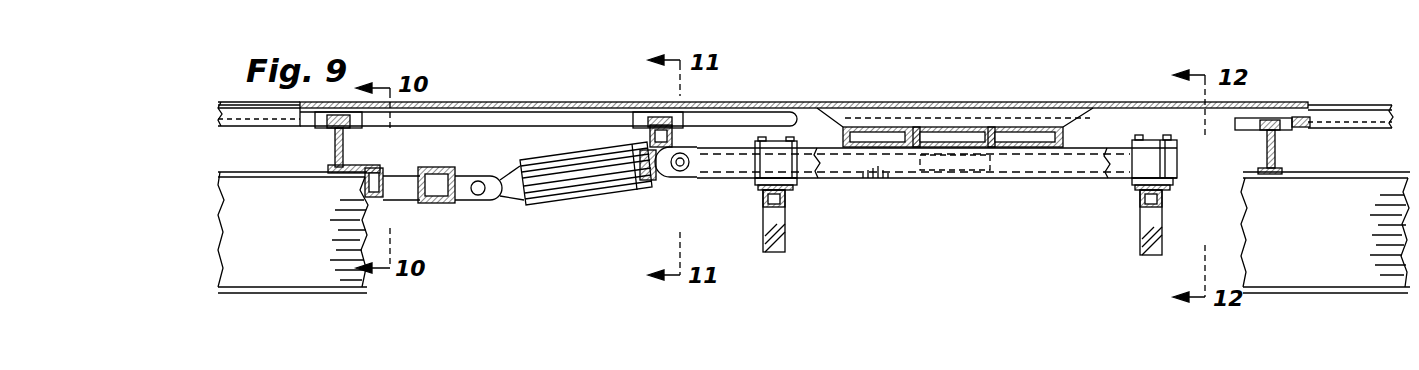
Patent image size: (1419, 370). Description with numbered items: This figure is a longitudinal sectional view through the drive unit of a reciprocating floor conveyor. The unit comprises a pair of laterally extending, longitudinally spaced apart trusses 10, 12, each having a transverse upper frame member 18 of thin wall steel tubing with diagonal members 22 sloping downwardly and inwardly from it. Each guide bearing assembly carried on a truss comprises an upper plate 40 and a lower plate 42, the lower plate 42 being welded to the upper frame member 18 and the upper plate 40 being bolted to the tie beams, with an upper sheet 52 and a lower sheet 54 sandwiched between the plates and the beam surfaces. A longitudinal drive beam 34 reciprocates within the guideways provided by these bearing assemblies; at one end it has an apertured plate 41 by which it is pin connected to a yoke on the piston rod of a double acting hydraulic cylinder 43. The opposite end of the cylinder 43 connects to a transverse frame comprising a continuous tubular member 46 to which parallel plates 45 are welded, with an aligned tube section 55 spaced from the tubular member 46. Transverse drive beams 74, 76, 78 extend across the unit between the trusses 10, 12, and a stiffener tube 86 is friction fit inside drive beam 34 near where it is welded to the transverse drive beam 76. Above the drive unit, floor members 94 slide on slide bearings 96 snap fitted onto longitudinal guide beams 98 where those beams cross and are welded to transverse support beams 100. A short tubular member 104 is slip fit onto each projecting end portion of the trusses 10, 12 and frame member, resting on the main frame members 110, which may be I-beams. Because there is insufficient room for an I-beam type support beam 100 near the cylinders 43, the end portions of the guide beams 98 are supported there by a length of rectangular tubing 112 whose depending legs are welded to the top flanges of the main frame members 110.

The truss 10 is at (1124, 226).
The truss 12 is at (746, 208).
The transverse upper frame member 18 is at (1140, 197).
The diagonal member 22 is at (1160, 235).
The longitudinal drive beam 34 is at (866, 180).
The upper plate 40 is at (1170, 142).
The apertured plate 41 is at (690, 178).
The lower plate 42 is at (1135, 183).
The double acting hydraulic cylinder 43 is at (557, 188).
The parallel plate 45 is at (436, 176).
The continuous tubular member 46 is at (372, 203).
The upper sheet 52 is at (1178, 152).
The lower sheet 54 is at (797, 180).
The tube section 55 is at (446, 170).
The transverse drive beam 74 is at (1023, 127).
The transverse drive beam 76 is at (947, 127).
The transverse drive beam 78 is at (878, 127).
The stiffener tube 86 is at (960, 178).
The floor member 94 is at (770, 102).
The slide bearing 96 is at (322, 127).
The longitudinal guide beam 98 is at (404, 176).
The transverse support beam 100 is at (340, 145).
The short tubular member 104 is at (385, 195).
The main frame member 110 is at (316, 238).
The rectangular tubing 112 is at (620, 180).